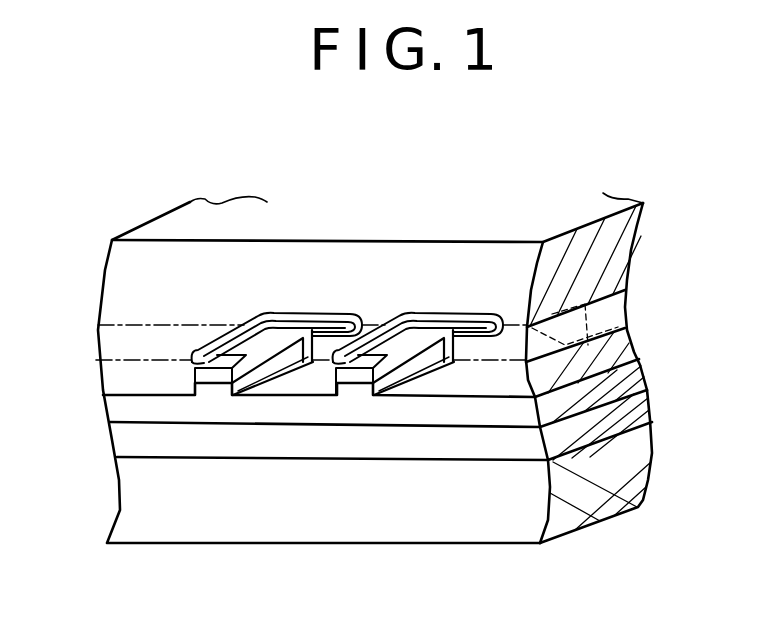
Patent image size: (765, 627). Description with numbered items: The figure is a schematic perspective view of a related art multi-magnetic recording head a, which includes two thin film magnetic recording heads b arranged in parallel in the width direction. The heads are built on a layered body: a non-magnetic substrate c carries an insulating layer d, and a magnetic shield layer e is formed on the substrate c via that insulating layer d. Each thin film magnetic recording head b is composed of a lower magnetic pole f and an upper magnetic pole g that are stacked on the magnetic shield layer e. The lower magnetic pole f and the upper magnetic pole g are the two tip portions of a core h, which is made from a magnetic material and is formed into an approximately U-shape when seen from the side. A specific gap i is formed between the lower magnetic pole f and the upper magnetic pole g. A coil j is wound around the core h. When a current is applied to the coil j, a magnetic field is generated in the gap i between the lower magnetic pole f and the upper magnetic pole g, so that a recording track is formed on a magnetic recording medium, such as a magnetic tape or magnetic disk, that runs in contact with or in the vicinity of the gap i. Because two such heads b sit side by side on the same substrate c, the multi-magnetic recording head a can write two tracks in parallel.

The multi-magnetic recording head a is at (675, 190).
The thin film magnetic recording head b is at (201, 398).
The non-magnetic substrate c is at (515, 502).
The insulating layer d is at (512, 443).
The magnetic shield layer e is at (512, 412).
The lower magnetic pole f is at (224, 396).
The upper magnetic pole g is at (197, 373).
The core h is at (282, 320).
The gap i is at (190, 382).
The coil j is at (318, 313).